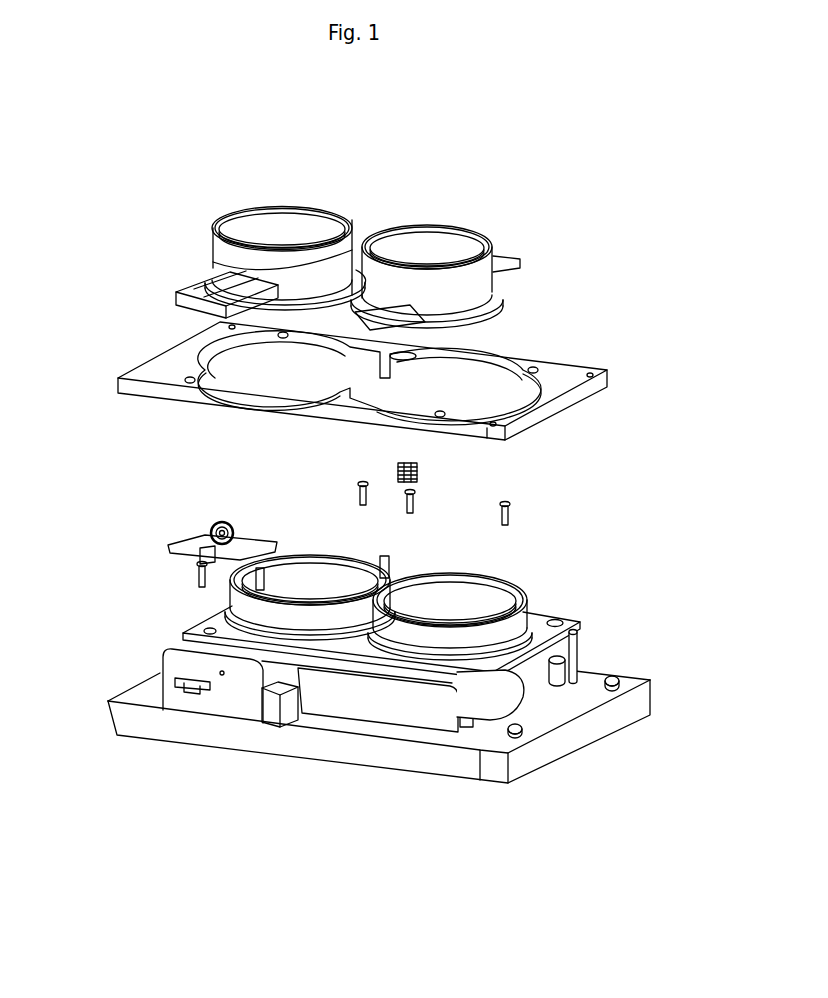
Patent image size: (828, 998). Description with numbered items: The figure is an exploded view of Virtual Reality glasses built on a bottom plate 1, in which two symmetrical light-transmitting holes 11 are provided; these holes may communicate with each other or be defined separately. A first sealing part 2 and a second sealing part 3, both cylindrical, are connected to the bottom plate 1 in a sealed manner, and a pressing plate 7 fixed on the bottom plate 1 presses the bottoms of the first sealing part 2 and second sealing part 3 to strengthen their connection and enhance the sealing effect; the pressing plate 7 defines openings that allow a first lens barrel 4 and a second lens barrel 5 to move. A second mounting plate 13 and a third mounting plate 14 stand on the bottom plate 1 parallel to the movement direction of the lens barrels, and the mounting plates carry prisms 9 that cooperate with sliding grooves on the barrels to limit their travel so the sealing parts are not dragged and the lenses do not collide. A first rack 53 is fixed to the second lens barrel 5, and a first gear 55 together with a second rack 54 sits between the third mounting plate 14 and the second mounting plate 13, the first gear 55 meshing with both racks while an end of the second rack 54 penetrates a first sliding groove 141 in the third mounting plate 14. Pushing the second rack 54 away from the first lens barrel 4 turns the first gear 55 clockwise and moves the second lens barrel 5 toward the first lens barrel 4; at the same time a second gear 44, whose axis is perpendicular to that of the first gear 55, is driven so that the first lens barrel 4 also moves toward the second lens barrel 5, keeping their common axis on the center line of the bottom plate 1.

The bottom plate 1 is at (553, 746).
The first sealing part 2 is at (527, 602).
The second sealing part 3 is at (287, 618).
The first lens barrel 4 is at (463, 272).
The second lens barrel 5 is at (322, 205).
The pressing plate 7 is at (547, 388).
The prisms 9 is at (508, 518).
The light-transmitting holes 11 is at (517, 692).
The second mounting plate 13 is at (375, 697).
The third mounting plate 14 is at (237, 698).
The second gear 44 is at (422, 468).
The first rack 53 is at (183, 293).
The second rack 54 is at (187, 540).
The first gear 55 is at (210, 530).
The first sliding groove 141 is at (193, 690).